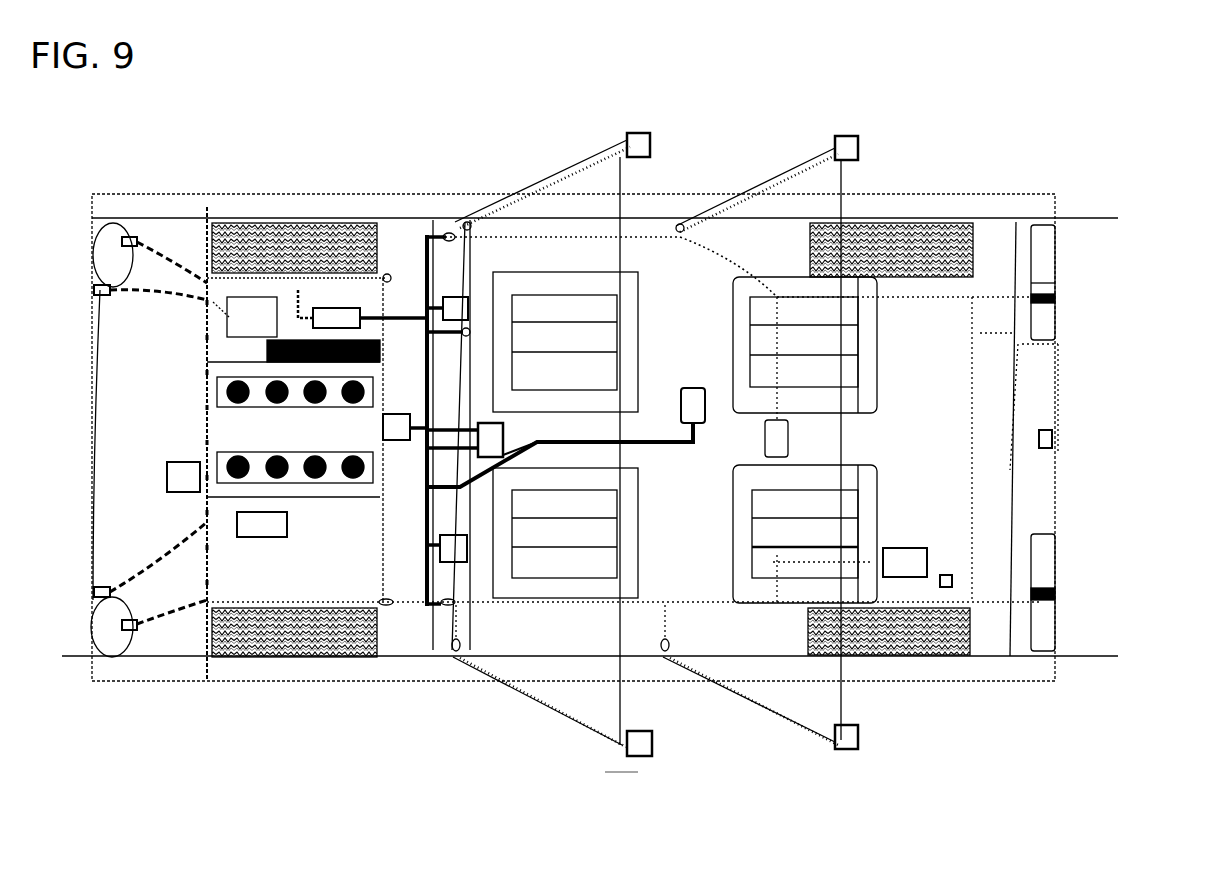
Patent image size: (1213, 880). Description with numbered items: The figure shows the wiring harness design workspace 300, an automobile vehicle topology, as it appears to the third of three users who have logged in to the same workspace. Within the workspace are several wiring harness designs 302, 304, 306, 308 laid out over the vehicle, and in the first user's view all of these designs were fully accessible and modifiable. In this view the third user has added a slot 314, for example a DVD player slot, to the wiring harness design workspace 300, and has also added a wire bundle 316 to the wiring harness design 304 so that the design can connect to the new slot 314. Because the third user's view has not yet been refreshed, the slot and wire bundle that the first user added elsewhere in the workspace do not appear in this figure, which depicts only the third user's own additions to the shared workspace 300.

The wiring harness design workspace 300 is at (1104, 110).
The wiring harness design 302 is at (207, 401).
The wiring harness design 304 is at (392, 275).
The wiring harness design 306 is at (548, 178).
The wiring harness design 308 is at (553, 707).
The slot 314 is at (697, 386).
The wire bundle 316 is at (660, 443).